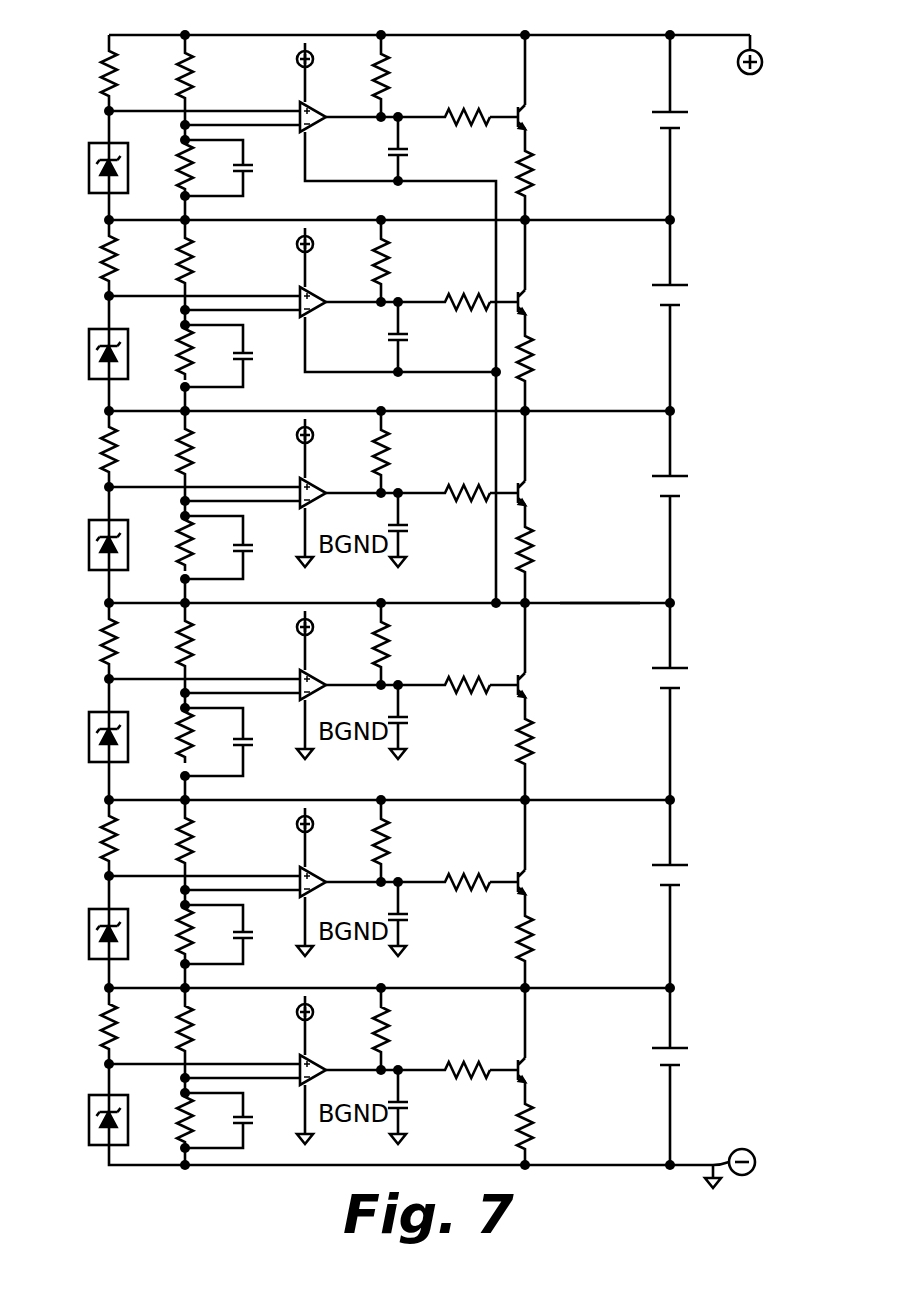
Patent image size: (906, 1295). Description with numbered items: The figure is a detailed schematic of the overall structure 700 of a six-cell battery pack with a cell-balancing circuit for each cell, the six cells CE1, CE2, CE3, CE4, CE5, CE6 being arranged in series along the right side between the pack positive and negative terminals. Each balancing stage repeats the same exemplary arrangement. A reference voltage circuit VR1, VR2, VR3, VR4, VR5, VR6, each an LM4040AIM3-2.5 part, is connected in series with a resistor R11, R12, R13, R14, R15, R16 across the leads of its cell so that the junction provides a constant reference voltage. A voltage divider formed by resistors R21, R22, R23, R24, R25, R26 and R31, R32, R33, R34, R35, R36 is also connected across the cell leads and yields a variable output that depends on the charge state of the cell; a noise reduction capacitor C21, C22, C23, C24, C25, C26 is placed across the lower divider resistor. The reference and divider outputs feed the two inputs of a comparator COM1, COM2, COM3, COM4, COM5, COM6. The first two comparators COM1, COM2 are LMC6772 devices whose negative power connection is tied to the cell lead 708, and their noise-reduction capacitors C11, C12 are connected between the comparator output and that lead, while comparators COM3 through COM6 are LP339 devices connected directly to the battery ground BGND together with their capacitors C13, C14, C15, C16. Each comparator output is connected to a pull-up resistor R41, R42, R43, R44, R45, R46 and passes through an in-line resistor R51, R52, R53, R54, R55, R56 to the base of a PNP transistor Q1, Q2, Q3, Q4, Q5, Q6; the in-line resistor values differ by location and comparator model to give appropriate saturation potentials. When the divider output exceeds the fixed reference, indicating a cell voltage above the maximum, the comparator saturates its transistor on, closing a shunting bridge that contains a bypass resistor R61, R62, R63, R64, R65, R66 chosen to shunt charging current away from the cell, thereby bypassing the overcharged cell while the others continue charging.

The overall structure 700 is at (778, 244).
The cell lead 708 is at (600, 602).
The resistor R11 is at (105, 85).
The resistor R12 is at (103, 251).
The resistor R13 is at (105, 445).
The resistor R14 is at (103, 635).
The resistor R15 is at (103, 831).
The resistor R16 is at (103, 1020).
The resistor R21 is at (182, 82).
The resistor R22 is at (193, 253).
The resistor R23 is at (190, 442).
The resistor R24 is at (190, 632).
The resistor R25 is at (190, 830).
The resistor R26 is at (190, 1026).
The resistor R31 is at (190, 166).
The resistor R32 is at (188, 340).
The resistor R33 is at (178, 532).
The resistor R34 is at (184, 756).
The resistor R35 is at (188, 925).
The resistor R36 is at (184, 1104).
The pull-up resistor R41 is at (390, 74).
The pull-up resistor R42 is at (390, 260).
The pull-up resistor R43 is at (390, 452).
The pull-up resistor R44 is at (390, 644).
The pull-up resistor R45 is at (390, 842).
The pull-up resistor R46 is at (390, 1037).
The resistor R51 is at (472, 118).
The resistor R52 is at (474, 302).
The resistor R53 is at (472, 490).
The resistor R54 is at (474, 682).
The resistor R55 is at (474, 884).
The resistor R56 is at (470, 1068).
The bypass resistor R61 is at (534, 170).
The bypass resistor R62 is at (534, 359).
The bypass resistor R63 is at (534, 557).
The bypass resistor R64 is at (534, 746).
The bypass resistor R65 is at (534, 934).
The bypass resistor R66 is at (534, 1114).
The reference voltage circuit VR1 is at (98, 166).
The reference voltage circuit VR2 is at (98, 322).
The reference voltage circuit VR3 is at (98, 513).
The reference voltage circuit VR4 is at (98, 705).
The reference voltage circuit VR5 is at (98, 903).
The reference voltage circuit VR6 is at (92, 1095).
The noise-reduction capacitor C11 is at (408, 152).
The noise-reduction capacitor C12 is at (408, 338).
The noise-reduction capacitor C13 is at (408, 526).
The noise-reduction capacitor C14 is at (408, 716).
The noise-reduction capacitor C15 is at (408, 914).
The noise-reduction capacitor C16 is at (408, 1104).
The noise reduction capacitor C21 is at (246, 183).
The noise reduction capacitor C22 is at (246, 373).
The noise reduction capacitor C23 is at (246, 566).
The noise reduction capacitor C24 is at (246, 755).
The noise reduction capacitor C25 is at (246, 950).
The noise reduction capacitor C26 is at (244, 1133).
The comparator COM1 is at (324, 130).
The comparator COM2 is at (324, 306).
The comparator COM3 is at (324, 496).
The comparator COM4 is at (324, 683).
The comparator COM5 is at (324, 882).
The comparator COM6 is at (324, 1066).
The transistor Q1 is at (530, 114).
The transistor Q2 is at (530, 299).
The transistor Q3 is at (530, 491).
The transistor Q4 is at (530, 682).
The transistor Q5 is at (530, 879).
The transistor Q6 is at (530, 1062).
The cell CE1 is at (682, 112).
The cell CE2 is at (700, 278).
The cell CE3 is at (684, 480).
The cell CE4 is at (700, 658).
The cell CE5 is at (700, 852).
The cell CE6 is at (682, 1043).
The battery ground BGND is at (338, 551).